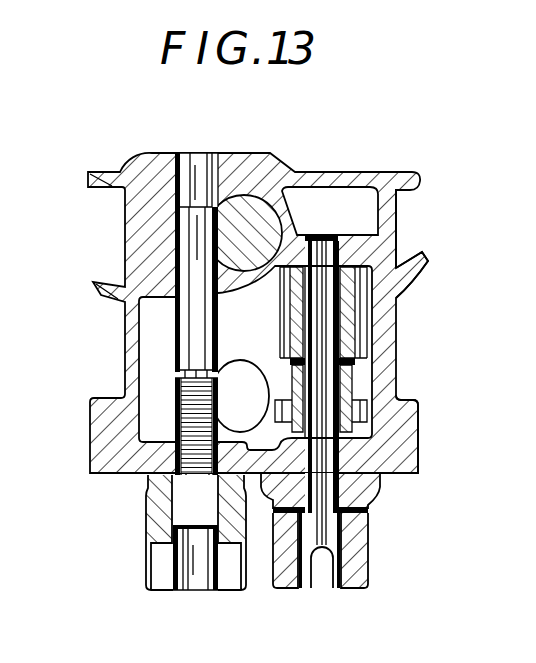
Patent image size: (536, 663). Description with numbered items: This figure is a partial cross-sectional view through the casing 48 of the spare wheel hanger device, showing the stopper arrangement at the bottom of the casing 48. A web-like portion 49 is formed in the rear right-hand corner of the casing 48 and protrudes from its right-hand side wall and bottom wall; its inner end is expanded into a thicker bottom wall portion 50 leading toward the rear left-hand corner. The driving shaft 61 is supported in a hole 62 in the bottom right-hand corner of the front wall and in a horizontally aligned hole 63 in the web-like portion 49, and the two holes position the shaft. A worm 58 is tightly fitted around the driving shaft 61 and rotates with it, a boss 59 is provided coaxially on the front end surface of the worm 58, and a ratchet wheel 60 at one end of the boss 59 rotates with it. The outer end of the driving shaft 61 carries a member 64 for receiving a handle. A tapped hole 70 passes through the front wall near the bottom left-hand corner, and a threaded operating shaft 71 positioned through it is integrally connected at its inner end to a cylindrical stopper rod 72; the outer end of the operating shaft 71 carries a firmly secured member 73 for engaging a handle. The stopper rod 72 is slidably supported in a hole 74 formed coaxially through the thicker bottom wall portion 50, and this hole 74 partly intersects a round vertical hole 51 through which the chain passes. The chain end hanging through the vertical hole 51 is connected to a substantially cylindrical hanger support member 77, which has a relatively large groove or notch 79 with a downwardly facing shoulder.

The casing 48 is at (400, 298).
The web-like portion 49 is at (355, 245).
The thicker bottom wall portion 50 is at (233, 160).
The round vertical hole 51 is at (256, 205).
The worm 58 is at (368, 343).
The boss 59 is at (353, 380).
The ratchet wheel 60 is at (367, 407).
The driving shaft 61 is at (410, 452).
The hole 62 is at (378, 495).
The hole 63 is at (322, 240).
The member for receiving a handle 64 is at (348, 590).
The tapped hole 70 is at (148, 510).
The threaded operating shaft 71 is at (172, 404).
The cylindrical stopper rod 72 is at (173, 330).
The member for engaging a handle 73 is at (157, 592).
The hole 74 is at (181, 153).
The hanger support member 77 is at (210, 228).
The groove or notch 79 is at (215, 253).